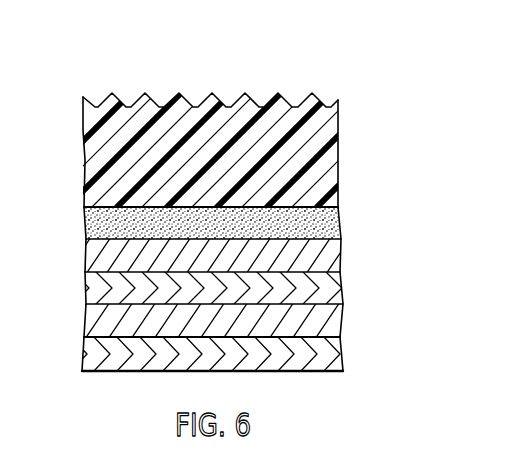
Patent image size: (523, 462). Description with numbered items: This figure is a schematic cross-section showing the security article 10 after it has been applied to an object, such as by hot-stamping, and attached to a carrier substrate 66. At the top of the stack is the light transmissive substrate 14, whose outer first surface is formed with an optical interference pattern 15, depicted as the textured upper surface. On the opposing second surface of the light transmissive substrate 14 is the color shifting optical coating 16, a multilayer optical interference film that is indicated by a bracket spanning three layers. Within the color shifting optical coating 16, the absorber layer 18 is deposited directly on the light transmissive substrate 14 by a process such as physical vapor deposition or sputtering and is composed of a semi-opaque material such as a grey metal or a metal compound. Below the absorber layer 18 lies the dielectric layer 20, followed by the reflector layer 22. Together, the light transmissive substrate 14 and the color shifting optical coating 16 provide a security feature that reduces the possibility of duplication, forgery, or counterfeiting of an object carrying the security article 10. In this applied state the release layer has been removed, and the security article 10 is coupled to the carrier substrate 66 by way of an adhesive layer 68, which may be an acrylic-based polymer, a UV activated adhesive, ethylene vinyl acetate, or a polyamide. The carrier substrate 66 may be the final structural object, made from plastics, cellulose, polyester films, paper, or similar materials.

The security article 10 is at (84, 187).
The light transmissive substrate 14 is at (323, 152).
The optical interference pattern 15 is at (233, 99).
The color shifting optical coating 16 is at (214, 253).
The absorber layer 18 is at (86, 221).
The dielectric layer 20 is at (90, 258).
The reflector layer 22 is at (90, 290).
The adhesive layer 68 is at (90, 323).
The carrier substrate 66 is at (90, 357).